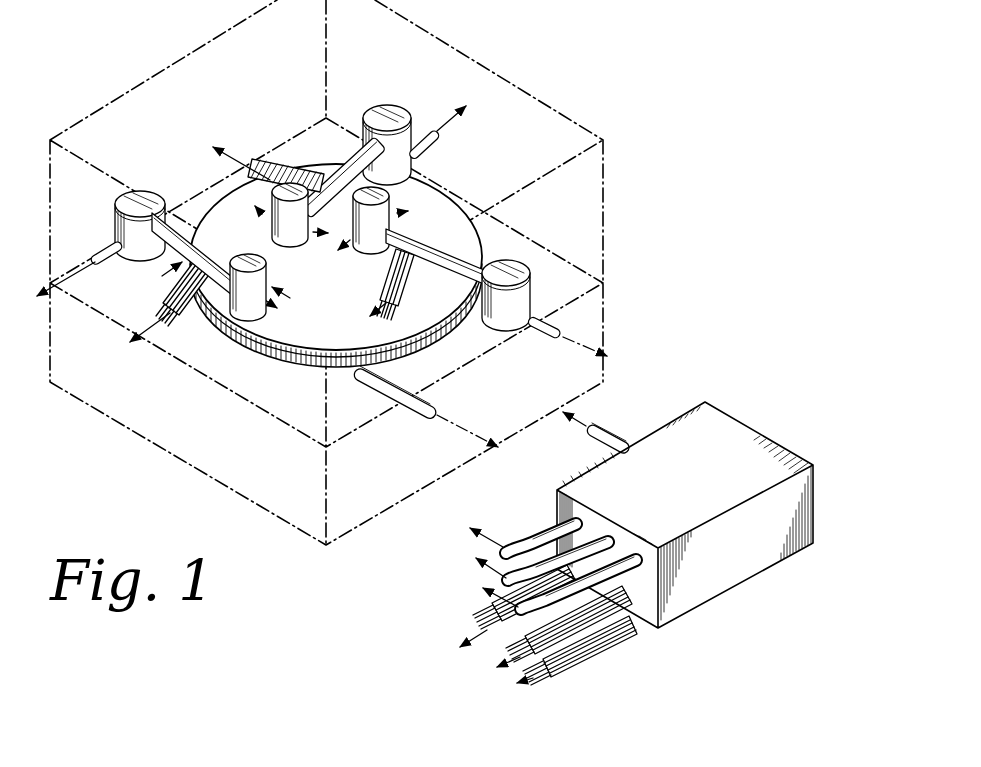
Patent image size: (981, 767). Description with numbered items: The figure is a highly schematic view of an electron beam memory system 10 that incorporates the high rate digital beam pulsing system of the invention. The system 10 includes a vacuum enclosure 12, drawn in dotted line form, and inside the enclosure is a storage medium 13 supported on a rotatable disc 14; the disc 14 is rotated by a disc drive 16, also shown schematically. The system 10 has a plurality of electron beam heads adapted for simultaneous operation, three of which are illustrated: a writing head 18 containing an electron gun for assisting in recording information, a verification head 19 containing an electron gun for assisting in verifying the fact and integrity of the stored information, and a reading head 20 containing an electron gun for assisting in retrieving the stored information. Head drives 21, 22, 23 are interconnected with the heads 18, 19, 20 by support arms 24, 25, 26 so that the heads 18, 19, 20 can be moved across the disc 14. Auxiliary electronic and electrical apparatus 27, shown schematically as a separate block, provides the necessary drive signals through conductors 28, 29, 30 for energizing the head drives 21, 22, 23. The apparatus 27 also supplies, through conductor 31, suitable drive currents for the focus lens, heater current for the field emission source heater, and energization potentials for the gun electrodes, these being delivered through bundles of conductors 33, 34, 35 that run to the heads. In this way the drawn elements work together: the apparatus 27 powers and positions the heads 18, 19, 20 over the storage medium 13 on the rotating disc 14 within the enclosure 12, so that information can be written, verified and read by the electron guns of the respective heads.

The electron beam memory system 10 is at (408, 351).
The vacuum enclosure 12 is at (606, 292).
The storage medium 13 is at (462, 257).
The rotatable disc 14 is at (336, 314).
The disc drive 16 is at (305, 373).
The writing head 18 is at (218, 322).
The verification head 19 is at (287, 178).
The reading head 20 is at (417, 173).
The head drive 21 is at (115, 231).
The head drive 22 is at (397, 163).
The head drive 23 is at (505, 318).
The support arm 24 is at (173, 232).
The support arm 25 is at (343, 138).
The support arm 26 is at (452, 248).
The auxiliary electronic and electrical apparatus 27 is at (700, 484).
The conductor 28 is at (108, 252).
The conductor 29 is at (417, 142).
The conductor 30 is at (540, 311).
The conductor 31 is at (424, 404).
The bundle of conductors 33 is at (124, 320).
The bundle of conductors 34 is at (305, 178).
The bundle of conductors 35 is at (441, 295).